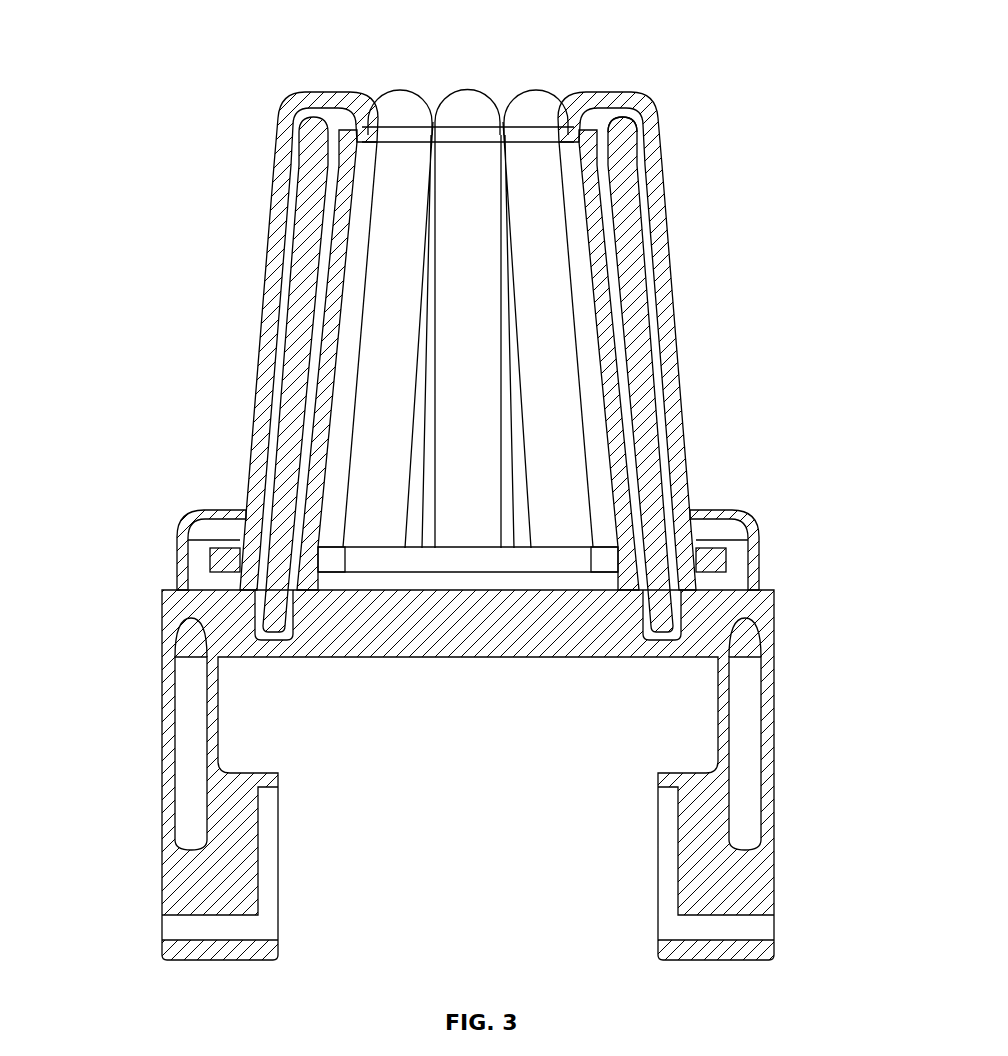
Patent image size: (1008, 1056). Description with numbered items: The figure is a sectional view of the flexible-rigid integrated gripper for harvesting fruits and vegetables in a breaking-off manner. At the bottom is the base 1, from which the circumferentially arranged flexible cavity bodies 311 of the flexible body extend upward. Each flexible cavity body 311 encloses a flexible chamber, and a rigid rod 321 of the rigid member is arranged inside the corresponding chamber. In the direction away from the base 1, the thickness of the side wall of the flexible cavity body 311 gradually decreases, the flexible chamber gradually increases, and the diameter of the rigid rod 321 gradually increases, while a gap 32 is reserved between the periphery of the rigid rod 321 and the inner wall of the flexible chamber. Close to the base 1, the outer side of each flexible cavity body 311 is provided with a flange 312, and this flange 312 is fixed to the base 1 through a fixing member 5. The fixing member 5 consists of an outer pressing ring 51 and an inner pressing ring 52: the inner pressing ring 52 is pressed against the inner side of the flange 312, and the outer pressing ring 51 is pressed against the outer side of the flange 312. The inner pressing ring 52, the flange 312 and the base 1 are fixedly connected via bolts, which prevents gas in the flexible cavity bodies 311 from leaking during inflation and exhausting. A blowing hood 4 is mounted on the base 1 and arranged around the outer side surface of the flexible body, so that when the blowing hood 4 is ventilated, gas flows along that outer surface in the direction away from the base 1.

The base 1 is at (698, 625).
The blowing hood 4 is at (235, 510).
The fixing member 5 is at (810, 395).
The outer pressing ring 51 is at (712, 548).
The inner pressing ring 52 is at (640, 456).
The gap 32 is at (690, 290).
The flexible cavity body 311 is at (667, 130).
The flange 312 is at (335, 552).
The rigid rod 321 is at (618, 150).